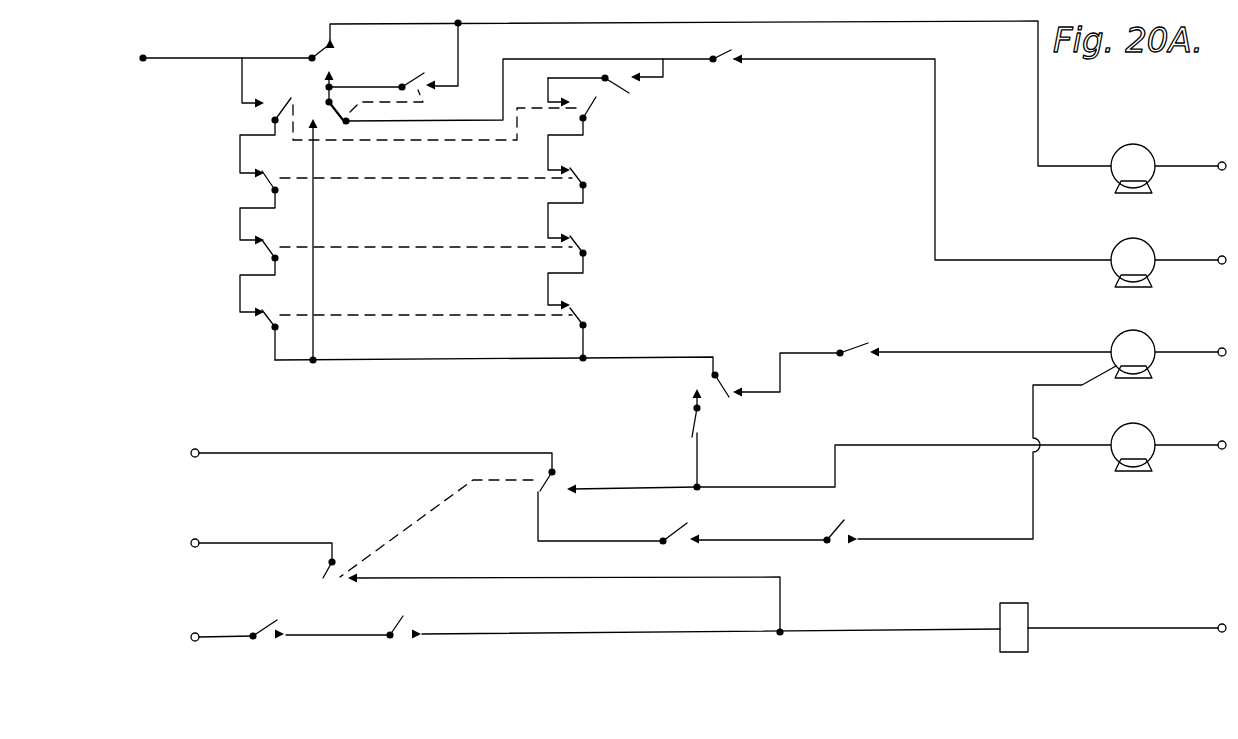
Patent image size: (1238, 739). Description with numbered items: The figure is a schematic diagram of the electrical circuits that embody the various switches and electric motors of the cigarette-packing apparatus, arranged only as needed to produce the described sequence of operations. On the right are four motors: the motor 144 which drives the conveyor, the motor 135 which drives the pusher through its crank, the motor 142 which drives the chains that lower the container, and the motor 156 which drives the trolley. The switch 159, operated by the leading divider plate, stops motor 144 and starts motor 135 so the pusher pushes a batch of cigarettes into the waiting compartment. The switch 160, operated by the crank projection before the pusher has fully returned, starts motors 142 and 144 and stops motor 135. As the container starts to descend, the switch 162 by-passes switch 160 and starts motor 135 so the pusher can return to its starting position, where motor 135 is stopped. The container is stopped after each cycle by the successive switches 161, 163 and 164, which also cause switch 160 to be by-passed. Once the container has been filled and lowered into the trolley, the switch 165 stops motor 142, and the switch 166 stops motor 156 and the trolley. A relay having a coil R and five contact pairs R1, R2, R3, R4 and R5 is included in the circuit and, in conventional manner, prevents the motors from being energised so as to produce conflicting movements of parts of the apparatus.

The switch 159 is at (318, 50).
The switch 160 is at (418, 76).
The switch 162 is at (262, 103).
The switch 161 is at (265, 180).
The switch 163 is at (265, 249).
The switch 164 is at (270, 322).
The switch 165 is at (735, 374).
The switch 166 is at (558, 472).
The relay coil R is at (1000, 612).
The relay contact pair R1 is at (258, 628).
The relay contact pair R2 is at (680, 532).
The relay contact pair R3 is at (692, 425).
The relay contact pair R4 is at (852, 352).
The relay contact pair R5 is at (728, 62).
The motor 144 is at (1145, 133).
The motor 135 is at (1150, 246).
The motor 142 is at (1151, 338).
The motor 156 is at (1149, 433).